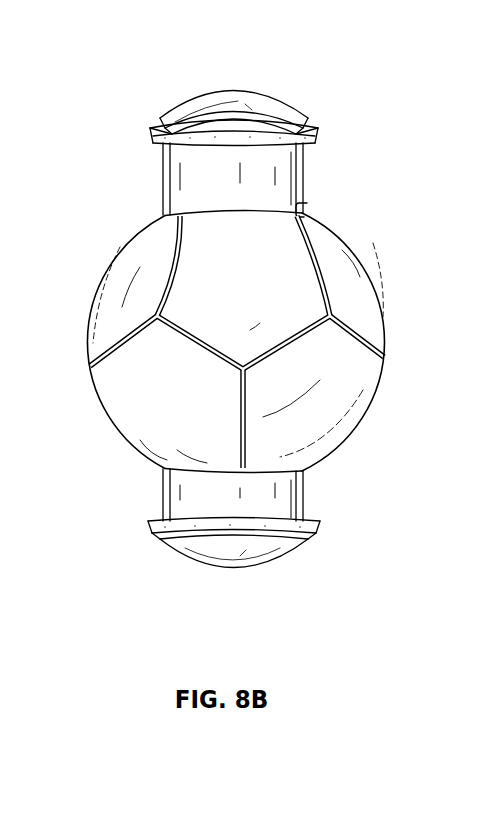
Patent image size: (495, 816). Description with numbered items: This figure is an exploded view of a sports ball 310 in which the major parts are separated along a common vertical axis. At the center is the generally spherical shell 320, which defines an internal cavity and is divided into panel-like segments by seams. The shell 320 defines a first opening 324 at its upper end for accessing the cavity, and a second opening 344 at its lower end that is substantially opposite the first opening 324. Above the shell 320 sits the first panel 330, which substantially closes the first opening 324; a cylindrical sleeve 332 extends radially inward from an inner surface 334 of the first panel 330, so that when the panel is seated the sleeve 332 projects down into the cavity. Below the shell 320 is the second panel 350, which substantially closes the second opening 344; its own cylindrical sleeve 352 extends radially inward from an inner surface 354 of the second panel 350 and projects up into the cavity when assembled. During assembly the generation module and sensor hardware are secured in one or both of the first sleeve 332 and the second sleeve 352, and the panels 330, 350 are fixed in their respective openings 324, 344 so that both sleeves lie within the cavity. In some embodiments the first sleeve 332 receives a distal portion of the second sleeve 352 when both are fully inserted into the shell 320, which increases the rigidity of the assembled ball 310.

The ball 310 is at (395, 127).
The shell 320 is at (350, 282).
The first opening 324 is at (307, 203).
The first panel 330 is at (272, 108).
The cylindrical sleeve 332 is at (290, 181).
The inner surface 334 is at (316, 138).
The second opening 344 is at (302, 463).
The second panel 350 is at (272, 553).
The cylindrical sleeve 352 is at (293, 490).
The inner surface 354 is at (318, 516).